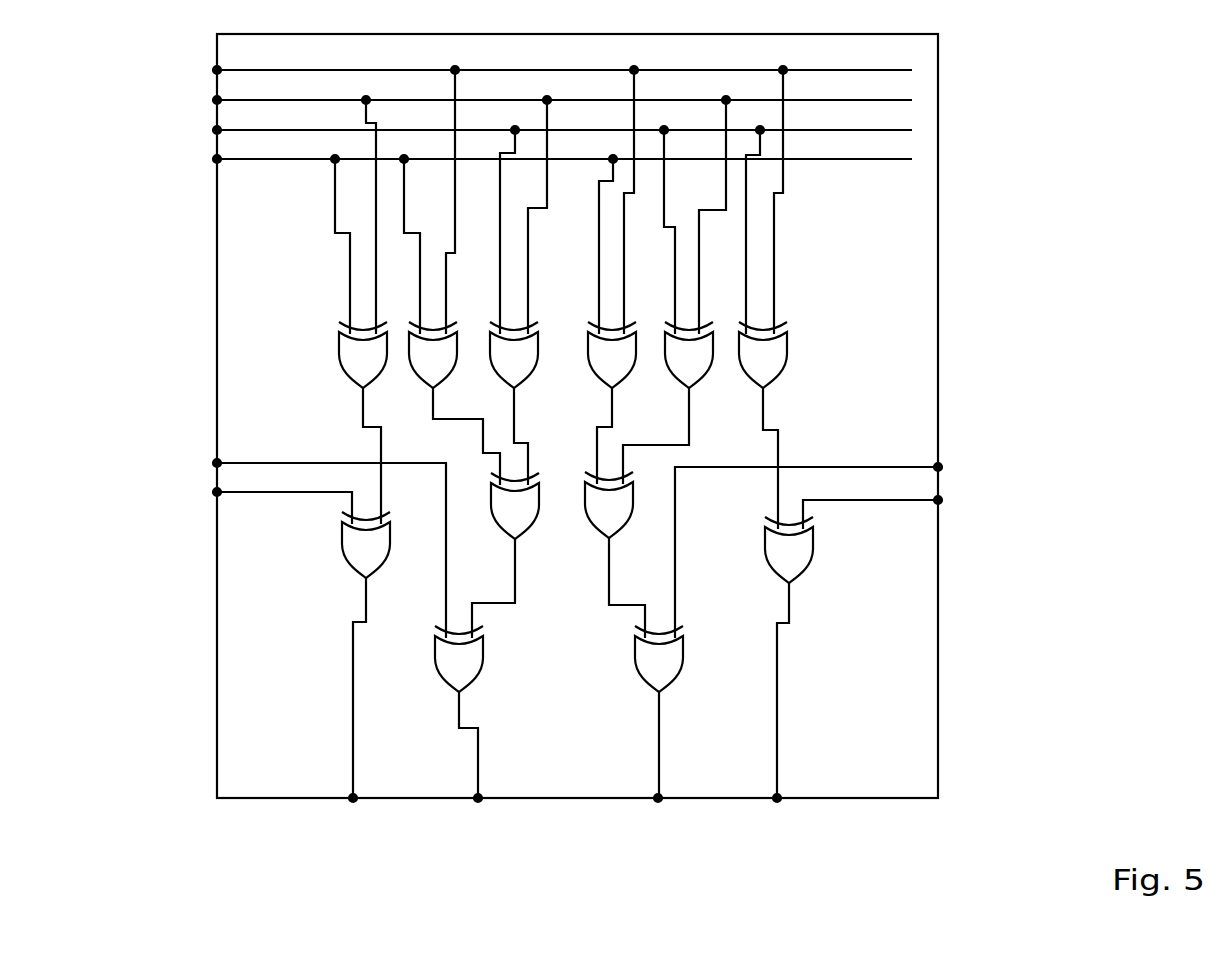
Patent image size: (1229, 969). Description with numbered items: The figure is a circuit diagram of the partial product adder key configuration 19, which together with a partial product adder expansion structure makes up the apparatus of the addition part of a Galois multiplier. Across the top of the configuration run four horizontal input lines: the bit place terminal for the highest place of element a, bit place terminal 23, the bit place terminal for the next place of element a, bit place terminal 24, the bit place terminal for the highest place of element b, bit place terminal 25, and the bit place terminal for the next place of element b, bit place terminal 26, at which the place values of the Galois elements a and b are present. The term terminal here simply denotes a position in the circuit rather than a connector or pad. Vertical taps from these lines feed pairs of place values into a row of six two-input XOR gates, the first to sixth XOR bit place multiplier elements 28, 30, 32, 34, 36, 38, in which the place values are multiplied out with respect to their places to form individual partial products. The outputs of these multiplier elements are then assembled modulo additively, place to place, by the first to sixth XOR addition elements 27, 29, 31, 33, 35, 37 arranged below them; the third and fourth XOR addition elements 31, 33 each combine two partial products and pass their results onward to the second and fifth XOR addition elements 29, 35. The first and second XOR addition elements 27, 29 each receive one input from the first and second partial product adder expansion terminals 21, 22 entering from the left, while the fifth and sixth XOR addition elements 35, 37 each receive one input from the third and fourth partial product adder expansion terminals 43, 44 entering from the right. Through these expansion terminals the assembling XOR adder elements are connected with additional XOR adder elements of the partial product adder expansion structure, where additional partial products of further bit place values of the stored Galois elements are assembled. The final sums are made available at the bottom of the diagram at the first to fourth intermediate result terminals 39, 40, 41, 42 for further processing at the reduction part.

The partial product adder key configuration 19 is at (865, 317).
The first partial product adder expansion terminal 21 is at (265, 500).
The second partial product adder expansion terminal 22 is at (312, 542).
The bit place terminal a_{n-1} 23 is at (544, 159).
The bit place terminal a_{n-2} 24 is at (544, 130).
The bit place terminal b_{n-1} 25 is at (544, 100).
The bit place terminal b_{n-2} 26 is at (544, 70).
The first XOR addition element 27 is at (380, 561).
The first XOR bit place multiplier element 28 is at (378, 368).
The second XOR addition element 29 is at (473, 671).
The second XOR bit place multiplier element 30 is at (448, 368).
The third XOR addition element 31 is at (530, 518).
The third XOR bit place multiplier element 32 is at (529, 368).
The fourth XOR addition element 33 is at (624, 518).
The fourth XOR bit place multiplier element 34 is at (629, 368).
The fifth XOR addition element 35 is at (675, 671).
The fifth XOR bit place multiplier element 36 is at (706, 368).
The sixth XOR addition element 37 is at (802, 565).
The sixth XOR bit place multiplier element 38 is at (776, 368).
The first intermediate result terminal 39 is at (355, 709).
The second intermediate result terminal 40 is at (479, 766).
The third intermediate result terminal 41 is at (656, 766).
The fourth intermediate result terminal 42 is at (780, 711).
The third partial product adder expansion terminal 43 is at (896, 506).
The fourth partial product adder expansion terminal 44 is at (832, 544).